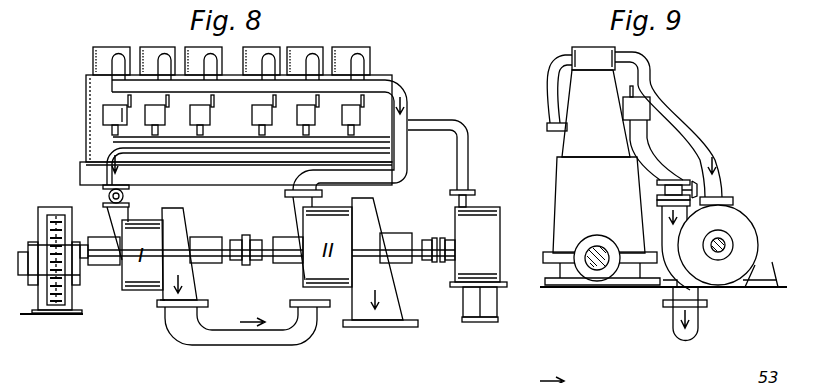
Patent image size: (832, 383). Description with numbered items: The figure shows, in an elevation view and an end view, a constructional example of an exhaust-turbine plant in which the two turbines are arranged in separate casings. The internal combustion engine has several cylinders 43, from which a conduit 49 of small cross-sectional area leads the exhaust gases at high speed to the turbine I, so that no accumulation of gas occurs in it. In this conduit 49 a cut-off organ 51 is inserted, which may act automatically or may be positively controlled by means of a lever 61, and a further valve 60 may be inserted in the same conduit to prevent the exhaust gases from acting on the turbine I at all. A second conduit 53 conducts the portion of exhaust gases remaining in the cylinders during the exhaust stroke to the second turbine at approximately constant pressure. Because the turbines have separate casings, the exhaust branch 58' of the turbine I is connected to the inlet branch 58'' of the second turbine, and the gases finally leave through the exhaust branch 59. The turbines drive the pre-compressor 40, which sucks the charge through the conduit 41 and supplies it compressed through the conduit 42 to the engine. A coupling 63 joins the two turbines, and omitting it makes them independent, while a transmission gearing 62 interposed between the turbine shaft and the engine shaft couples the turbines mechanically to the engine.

In FIG. 8, the pre-compressor 40 is at (497, 227).
In FIG. 8, the conduit 41 is at (488, 305).
In FIG. 8, the conduit 42 is at (443, 122).
In FIG. 9, the conduit 42 is at (548, 118).
In FIG. 8, the cylinders 43 is at (88, 101).
In FIG. 9, the cylinders 43 is at (601, 166).
In FIG. 8, the conduit 49 is at (174, 142).
In FIG. 9, the conduit 49 is at (658, 155).
In FIG. 8, the cut-off organ 51 is at (106, 114).
In FIG. 9, the cut-off organ 51 is at (652, 106).
In FIG. 8, the second conduit 53 is at (388, 83).
In FIG. 9, the second conduit 53 is at (655, 90).
In FIG. 8, the exhaust branch 58' is at (141, 315).
In FIG. 9, the exhaust branch 58' is at (660, 314).
In FIG. 8, the inlet branch 58'' is at (257, 329).
In FIG. 8, the exhaust branch 59 is at (385, 318).
In FIG. 8, the valve 60 is at (104, 194).
In FIG. 9, the valve 60 is at (698, 190).
In FIG. 8, the lever 61 is at (128, 100).
In FIG. 8, the transmission gearing 62 is at (64, 299).
In FIG. 8, the coupling 63 is at (247, 238).
In FIG. 9, the turbine I is at (735, 240).